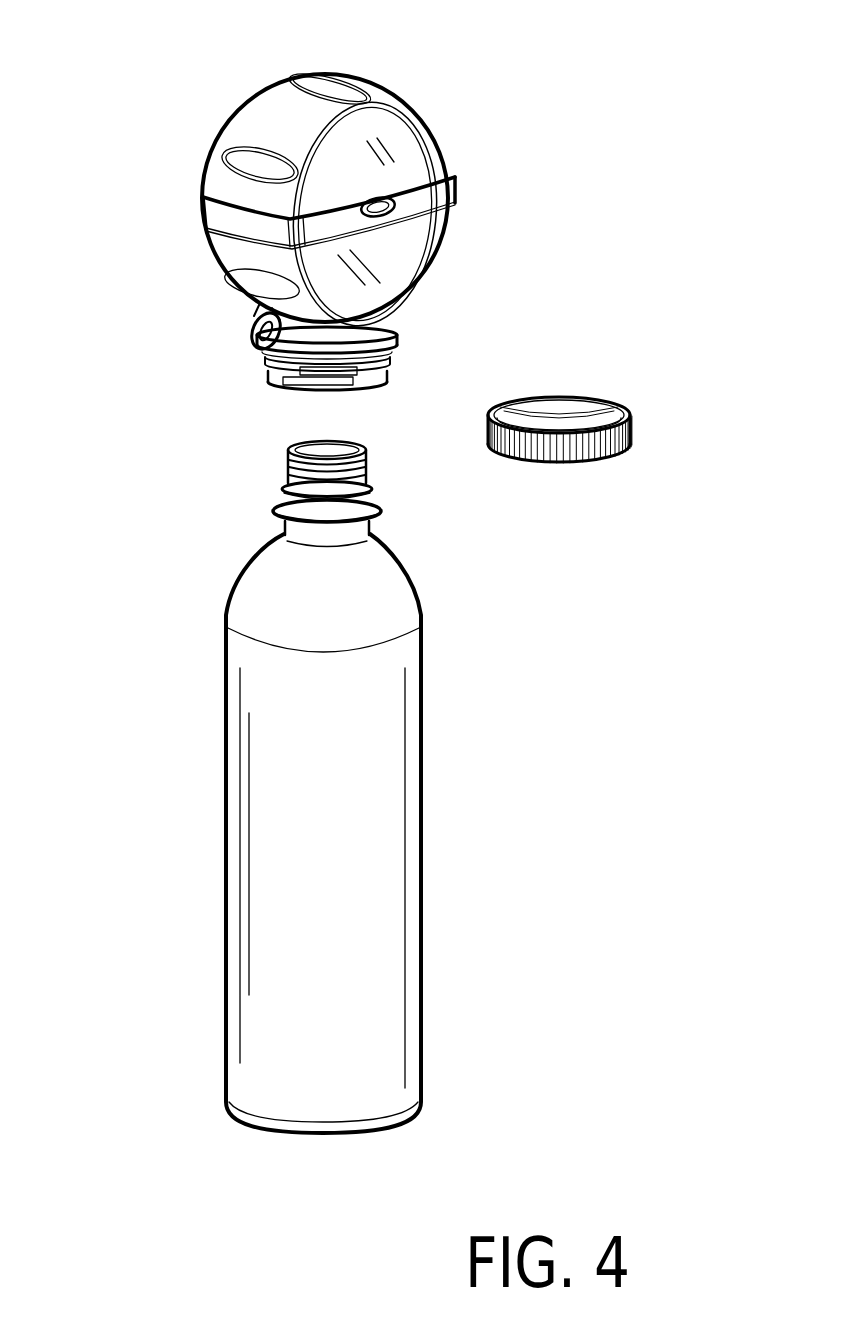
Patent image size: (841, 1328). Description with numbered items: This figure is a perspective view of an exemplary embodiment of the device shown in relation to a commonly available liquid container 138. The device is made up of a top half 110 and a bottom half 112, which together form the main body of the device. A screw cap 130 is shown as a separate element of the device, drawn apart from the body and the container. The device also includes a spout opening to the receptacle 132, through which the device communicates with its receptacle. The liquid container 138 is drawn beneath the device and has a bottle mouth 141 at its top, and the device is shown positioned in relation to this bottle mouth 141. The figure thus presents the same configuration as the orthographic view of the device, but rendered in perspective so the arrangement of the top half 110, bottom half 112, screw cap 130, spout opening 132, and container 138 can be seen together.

The top half 110 is at (405, 252).
The bottom half 112 is at (405, 138).
The spout opening to the receptacle 132 is at (350, 404).
The screw cap 130 is at (583, 403).
The bottle mouth 141 is at (300, 432).
The liquid container 138 is at (380, 795).